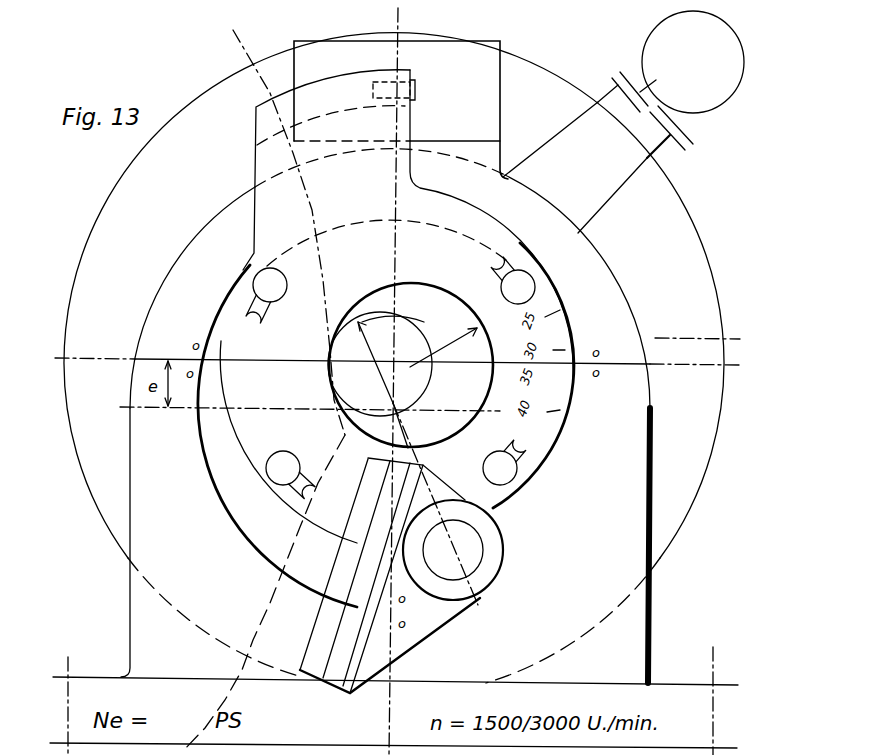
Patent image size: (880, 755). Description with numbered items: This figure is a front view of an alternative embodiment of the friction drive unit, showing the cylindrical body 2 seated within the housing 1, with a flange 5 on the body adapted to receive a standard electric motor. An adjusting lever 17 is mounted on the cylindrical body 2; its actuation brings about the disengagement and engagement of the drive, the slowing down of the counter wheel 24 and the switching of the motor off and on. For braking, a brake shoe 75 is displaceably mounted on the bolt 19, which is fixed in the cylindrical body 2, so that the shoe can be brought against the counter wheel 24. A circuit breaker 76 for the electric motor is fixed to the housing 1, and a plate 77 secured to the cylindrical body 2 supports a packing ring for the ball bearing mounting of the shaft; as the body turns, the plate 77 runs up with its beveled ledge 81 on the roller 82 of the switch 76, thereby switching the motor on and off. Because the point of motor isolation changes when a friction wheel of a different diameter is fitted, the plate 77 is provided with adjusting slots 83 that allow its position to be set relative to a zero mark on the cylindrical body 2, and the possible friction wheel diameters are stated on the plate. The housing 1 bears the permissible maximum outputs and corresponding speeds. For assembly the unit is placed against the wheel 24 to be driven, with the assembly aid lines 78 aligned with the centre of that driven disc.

The housing 1 is at (640, 635).
The cylindrical body 2 is at (267, 543).
The flange 5 is at (118, 218).
The adjusting lever 17 is at (712, 102).
The bolt 19 is at (478, 566).
The counter wheel 24 is at (241, 27).
The brake shoe 75 is at (440, 628).
The circuit breaker 76 is at (485, 108).
The plate 77 is at (462, 213).
The assembly aid line 78 is at (253, 360).
The beveled ledge 81 is at (325, 97).
The roller 82 is at (415, 88).
The adjusting slots 83 is at (522, 457).